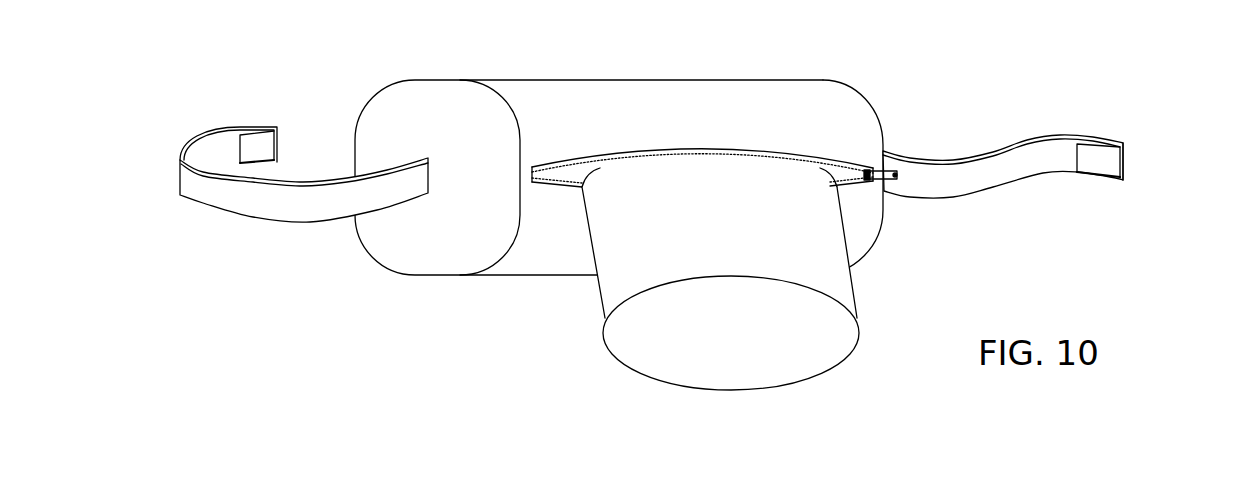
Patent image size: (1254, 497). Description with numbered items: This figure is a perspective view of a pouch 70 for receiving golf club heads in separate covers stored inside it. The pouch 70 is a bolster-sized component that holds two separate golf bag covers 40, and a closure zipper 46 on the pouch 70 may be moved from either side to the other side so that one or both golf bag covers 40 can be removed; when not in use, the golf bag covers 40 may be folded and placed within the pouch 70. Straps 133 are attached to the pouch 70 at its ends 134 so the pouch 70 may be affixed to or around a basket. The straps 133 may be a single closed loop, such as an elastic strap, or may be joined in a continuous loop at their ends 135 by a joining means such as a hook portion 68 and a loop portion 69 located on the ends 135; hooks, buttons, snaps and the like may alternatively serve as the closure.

The golf bag cover 40 is at (612, 290).
The closure zipper 46 is at (563, 164).
The hook portion 68 is at (255, 145).
The loop portion 69 is at (1102, 157).
The pouch 70 is at (675, 126).
The strap 133 is at (700, 173).
The end 134 is at (418, 240).
The end 135 is at (282, 148).